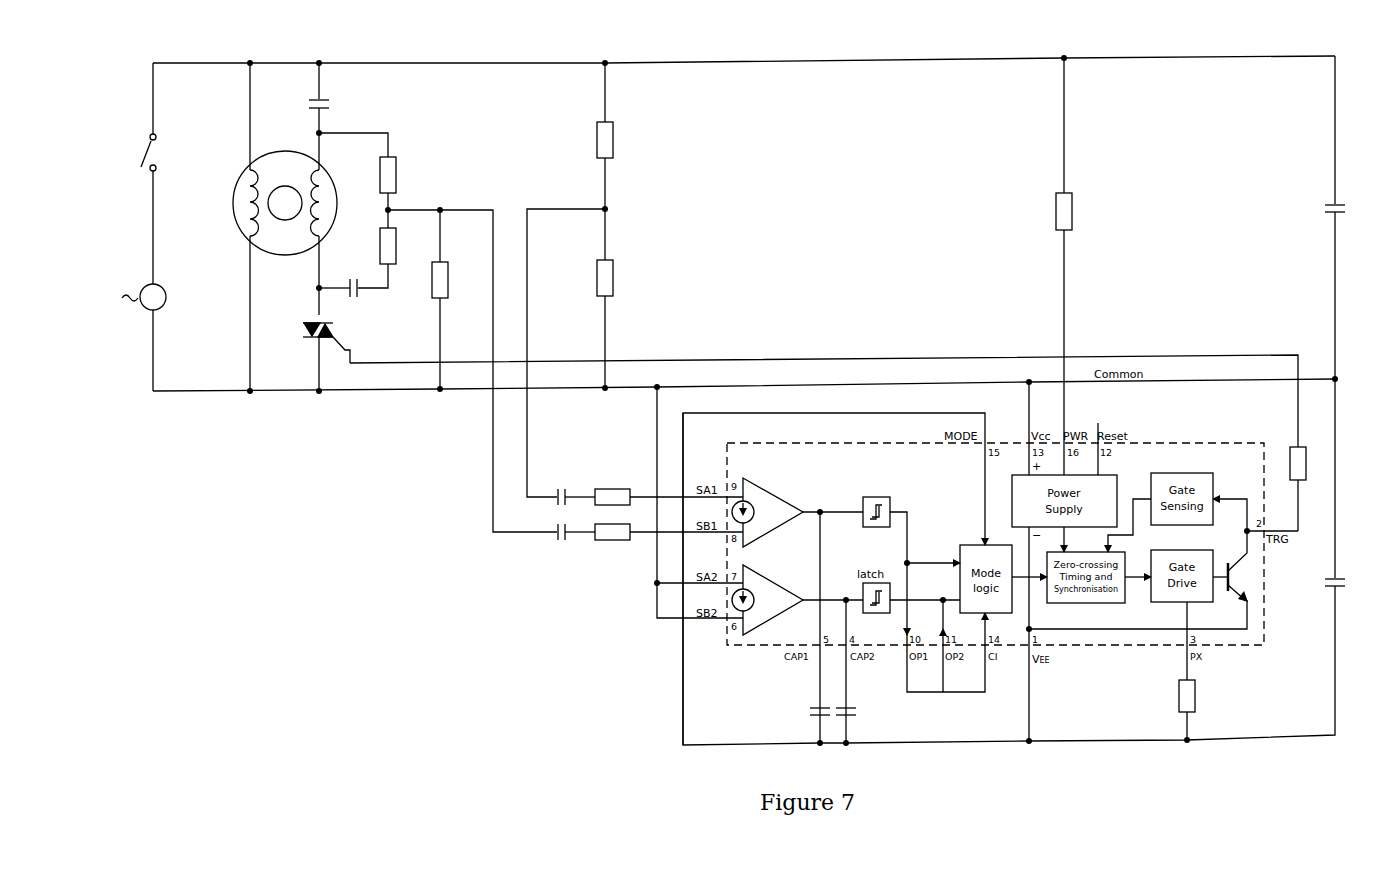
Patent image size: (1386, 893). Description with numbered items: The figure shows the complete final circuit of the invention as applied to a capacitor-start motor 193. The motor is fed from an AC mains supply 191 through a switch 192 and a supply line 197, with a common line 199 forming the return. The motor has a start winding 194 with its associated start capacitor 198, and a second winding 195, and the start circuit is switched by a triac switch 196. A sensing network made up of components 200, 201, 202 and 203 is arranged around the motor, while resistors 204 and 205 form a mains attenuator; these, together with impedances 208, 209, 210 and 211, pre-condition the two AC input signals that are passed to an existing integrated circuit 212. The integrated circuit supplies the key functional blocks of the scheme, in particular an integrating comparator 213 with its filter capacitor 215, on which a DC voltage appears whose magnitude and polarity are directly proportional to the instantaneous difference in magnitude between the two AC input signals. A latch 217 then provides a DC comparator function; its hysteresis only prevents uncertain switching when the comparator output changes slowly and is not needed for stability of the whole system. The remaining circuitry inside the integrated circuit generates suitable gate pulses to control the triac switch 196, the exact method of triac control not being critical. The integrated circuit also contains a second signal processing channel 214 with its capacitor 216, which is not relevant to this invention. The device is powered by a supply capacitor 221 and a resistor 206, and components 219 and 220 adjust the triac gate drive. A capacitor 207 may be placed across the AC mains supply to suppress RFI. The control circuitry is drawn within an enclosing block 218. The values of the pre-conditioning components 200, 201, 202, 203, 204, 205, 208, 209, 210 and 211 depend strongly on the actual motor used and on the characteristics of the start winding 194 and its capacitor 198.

The AC power source 191 is at (145, 308).
The switch 192 is at (142, 152).
The motor 193 is at (283, 143).
The start winding 194 is at (326, 192).
The motor winding 195 is at (244, 184).
The triac switch 196 is at (312, 322).
The supply line 197 is at (512, 62).
The capacitor 198 is at (328, 99).
The common line 199 is at (283, 392).
The sensing network 200 is at (396, 172).
The sensing network 201 is at (397, 248).
The sensing network 202 is at (358, 296).
The sensing network 203 is at (450, 279).
The mains attenuator 204 is at (614, 137).
The mains attenuator 205 is at (614, 276).
The resistor 206 is at (1074, 207).
The capacitor 207 is at (1340, 203).
The impedance 208 is at (560, 488).
The impedance 209 is at (613, 488).
The impedance 210 is at (562, 541).
The impedance 211 is at (620, 541).
The integrated circuit 212 is at (790, 434).
The integrating comparator 213 is at (778, 534).
The dual signal processing capability 214 is at (783, 621).
The filter capacitor 215 is at (808, 710).
The dual signal processing capability 216 is at (850, 710).
The latch 217 is at (892, 503).
The control circuit enclosure 218 is at (1086, 748).
The component 219 is at (1178, 703).
The component 220 is at (1292, 447).
The supply capacitor 221 is at (1336, 576).